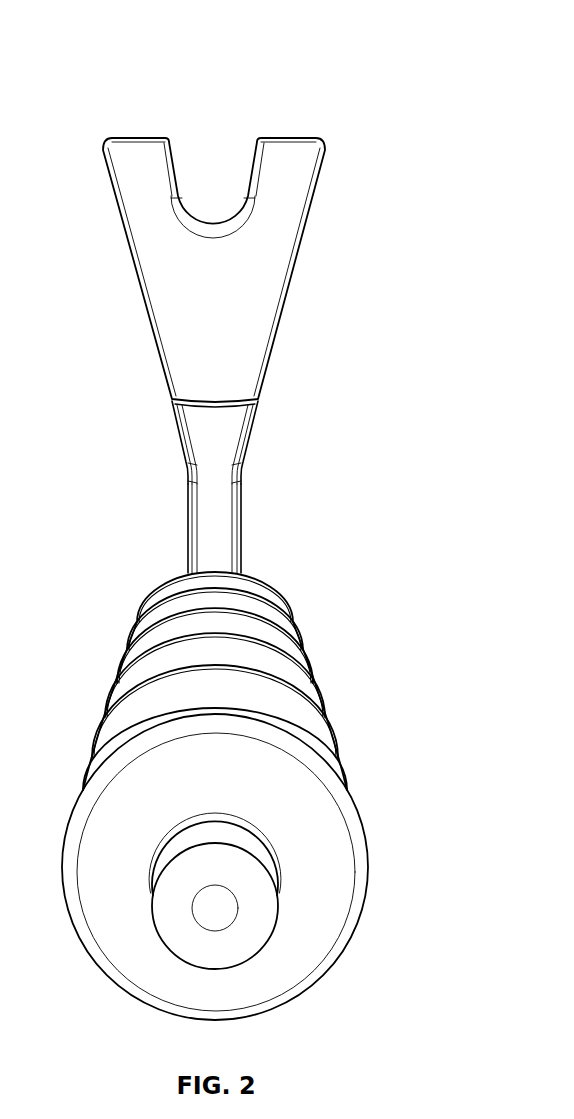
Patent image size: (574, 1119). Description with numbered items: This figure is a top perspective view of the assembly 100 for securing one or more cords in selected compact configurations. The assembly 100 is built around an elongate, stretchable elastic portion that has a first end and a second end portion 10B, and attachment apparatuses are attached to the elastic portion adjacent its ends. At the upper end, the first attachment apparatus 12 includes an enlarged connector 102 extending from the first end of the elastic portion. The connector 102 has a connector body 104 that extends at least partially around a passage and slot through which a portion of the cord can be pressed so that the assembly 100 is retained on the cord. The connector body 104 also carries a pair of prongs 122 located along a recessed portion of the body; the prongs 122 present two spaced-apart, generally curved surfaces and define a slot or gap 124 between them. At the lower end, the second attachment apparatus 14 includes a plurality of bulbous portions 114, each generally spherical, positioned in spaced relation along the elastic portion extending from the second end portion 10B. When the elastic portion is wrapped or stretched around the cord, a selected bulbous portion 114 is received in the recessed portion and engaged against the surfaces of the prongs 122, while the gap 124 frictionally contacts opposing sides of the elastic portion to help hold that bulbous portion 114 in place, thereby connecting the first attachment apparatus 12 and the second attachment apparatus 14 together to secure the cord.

The first attachment apparatus 12 is at (275, 40).
The assembly 100 is at (327, 313).
The connector 102 is at (287, 421).
The connector body 104 is at (164, 428).
The prongs 122 is at (133, 146).
The slot or gap 124 is at (223, 201).
The second attachment apparatus 14 is at (66, 720).
The bulbous portions 114 is at (312, 802).
The second end portion 10B is at (242, 531).